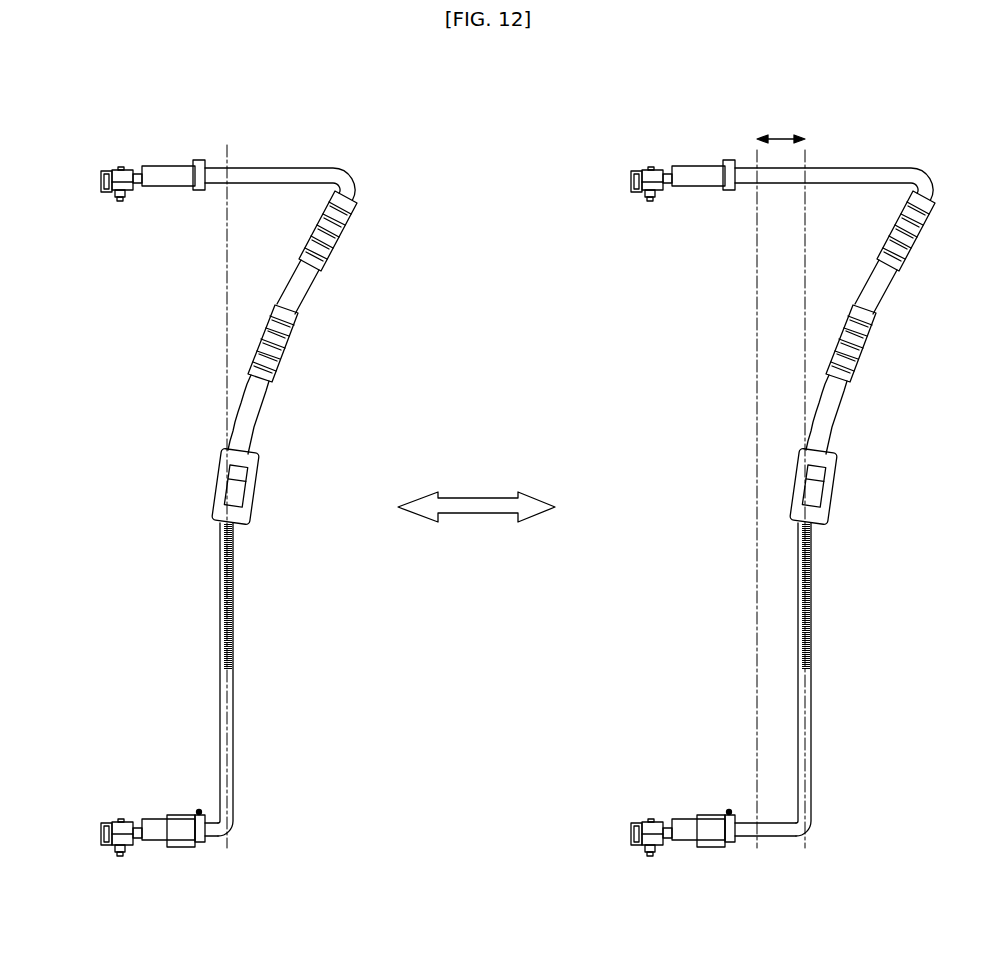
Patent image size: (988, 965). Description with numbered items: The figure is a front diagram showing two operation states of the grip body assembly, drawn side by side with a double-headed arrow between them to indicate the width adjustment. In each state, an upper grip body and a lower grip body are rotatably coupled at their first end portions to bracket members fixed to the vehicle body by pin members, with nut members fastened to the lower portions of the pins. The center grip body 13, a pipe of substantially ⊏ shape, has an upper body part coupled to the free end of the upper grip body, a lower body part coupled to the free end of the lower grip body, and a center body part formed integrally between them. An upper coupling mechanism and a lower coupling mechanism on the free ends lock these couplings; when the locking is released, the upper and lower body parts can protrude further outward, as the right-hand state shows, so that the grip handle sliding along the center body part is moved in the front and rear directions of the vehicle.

The center grip body 13 is at (216, 605).